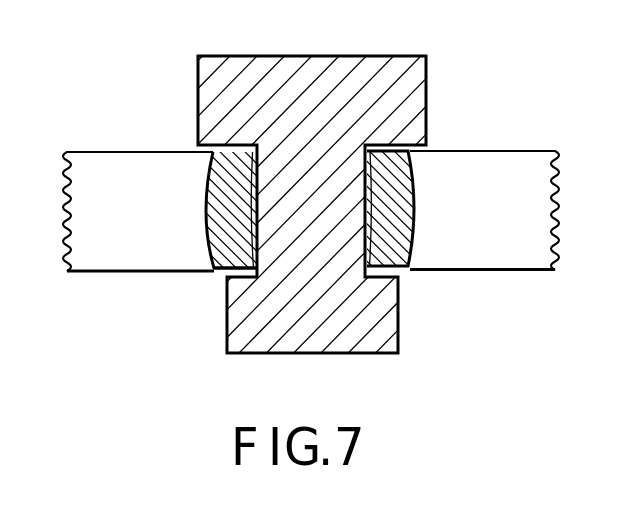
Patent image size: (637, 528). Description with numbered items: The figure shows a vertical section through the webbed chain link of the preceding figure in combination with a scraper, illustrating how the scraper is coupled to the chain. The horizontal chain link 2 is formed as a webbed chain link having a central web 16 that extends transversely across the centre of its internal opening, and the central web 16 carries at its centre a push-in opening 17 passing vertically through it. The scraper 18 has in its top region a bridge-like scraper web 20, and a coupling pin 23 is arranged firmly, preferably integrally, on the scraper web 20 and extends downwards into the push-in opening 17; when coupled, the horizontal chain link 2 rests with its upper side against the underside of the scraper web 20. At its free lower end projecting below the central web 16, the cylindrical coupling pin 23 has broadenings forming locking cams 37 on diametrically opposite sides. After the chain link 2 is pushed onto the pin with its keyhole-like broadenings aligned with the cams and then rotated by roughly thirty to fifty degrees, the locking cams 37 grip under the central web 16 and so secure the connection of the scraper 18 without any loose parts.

The horizontal chain link 2 is at (98, 173).
The central web 16 is at (215, 268).
The push-in opening 17 is at (367, 247).
The scraper 18 is at (318, 220).
The scraper web 20 is at (412, 93).
The coupling pin 23 is at (310, 241).
The locking cam 37 is at (227, 328).